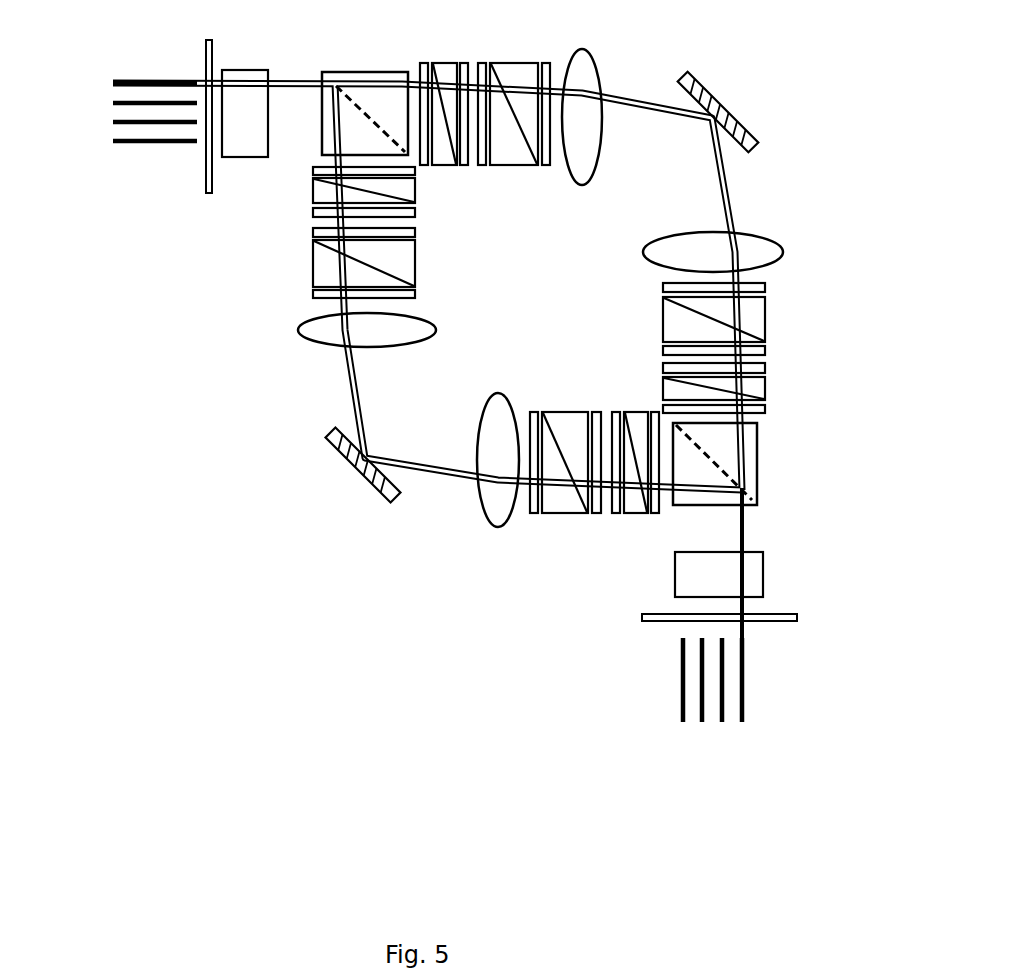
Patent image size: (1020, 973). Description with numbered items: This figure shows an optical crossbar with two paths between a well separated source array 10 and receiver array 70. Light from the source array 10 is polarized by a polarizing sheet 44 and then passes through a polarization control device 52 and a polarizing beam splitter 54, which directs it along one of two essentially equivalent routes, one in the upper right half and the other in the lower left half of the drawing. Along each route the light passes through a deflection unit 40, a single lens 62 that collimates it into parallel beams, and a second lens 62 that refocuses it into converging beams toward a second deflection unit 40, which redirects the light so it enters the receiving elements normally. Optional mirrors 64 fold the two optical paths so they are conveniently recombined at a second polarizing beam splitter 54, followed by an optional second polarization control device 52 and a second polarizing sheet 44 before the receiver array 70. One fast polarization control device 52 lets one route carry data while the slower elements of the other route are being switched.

The source array 10 is at (117, 112).
The polarizing sheet 44 is at (521, 338).
The polarization control device 52 is at (522, 309).
The polarizing beam splitter 54 is at (572, 263).
The deflection unit 40 is at (553, 48).
The single lens 62 is at (536, 295).
The mirror 64 is at (540, 286).
The receiver array 70 is at (712, 709).